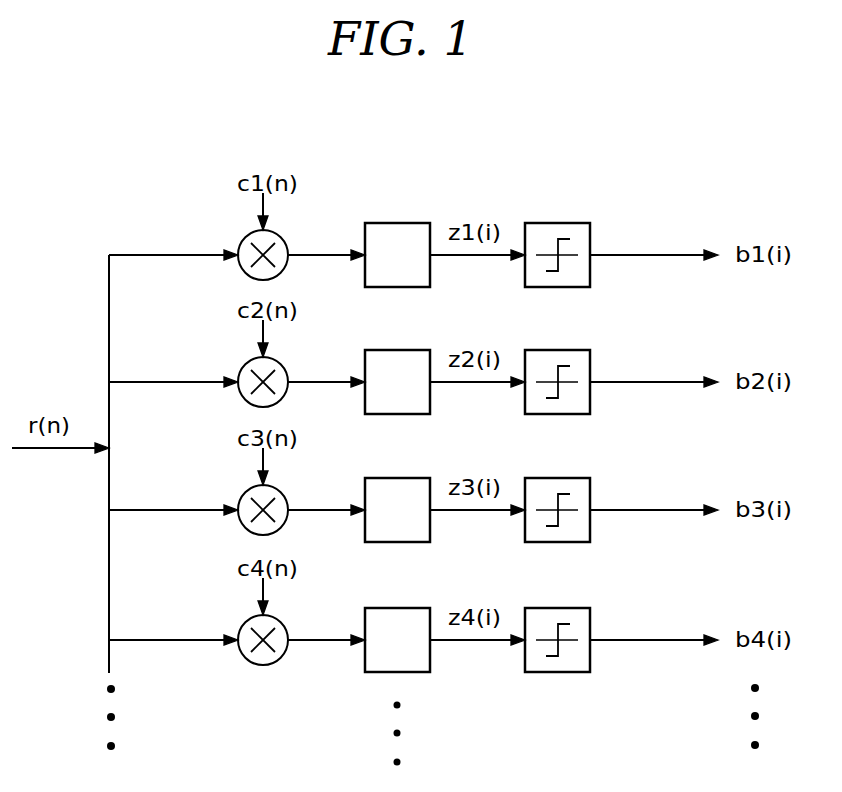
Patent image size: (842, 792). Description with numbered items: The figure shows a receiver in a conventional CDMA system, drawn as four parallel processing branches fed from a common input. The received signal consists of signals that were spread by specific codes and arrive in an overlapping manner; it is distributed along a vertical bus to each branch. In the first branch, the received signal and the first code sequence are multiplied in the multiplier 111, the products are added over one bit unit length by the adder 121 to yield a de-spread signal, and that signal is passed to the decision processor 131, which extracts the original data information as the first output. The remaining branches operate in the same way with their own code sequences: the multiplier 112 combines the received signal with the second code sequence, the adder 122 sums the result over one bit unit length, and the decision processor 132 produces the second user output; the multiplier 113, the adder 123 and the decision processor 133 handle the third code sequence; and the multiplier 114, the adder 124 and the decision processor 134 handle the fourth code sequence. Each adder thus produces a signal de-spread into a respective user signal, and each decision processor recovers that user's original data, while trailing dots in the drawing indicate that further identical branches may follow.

The multiplier 111 is at (281, 239).
The adder 121 is at (400, 223).
The decision processor 131 is at (560, 223).
The multiplier 112 is at (281, 366).
The adder 122 is at (400, 350).
The decision processor 132 is at (560, 350).
The multiplier 113 is at (281, 494).
The adder 123 is at (400, 478).
The decision processor 133 is at (560, 478).
The multiplier 114 is at (281, 624).
The adder 124 is at (400, 608).
The decision processor 134 is at (560, 608).